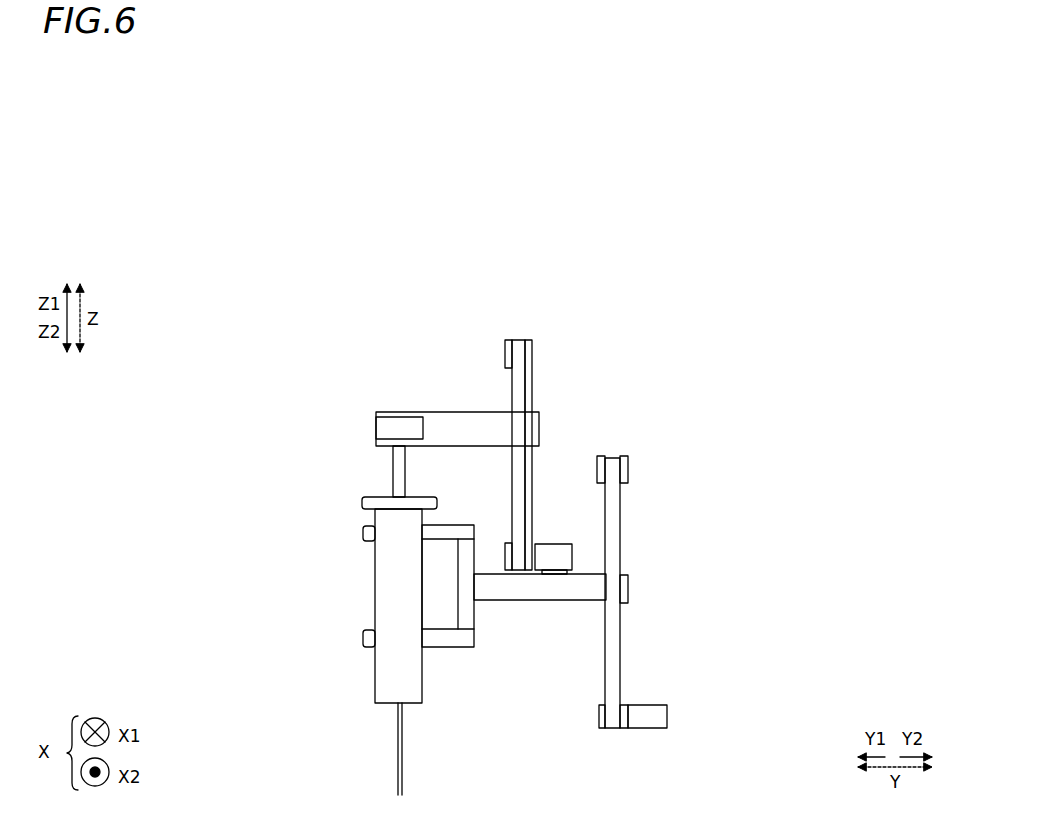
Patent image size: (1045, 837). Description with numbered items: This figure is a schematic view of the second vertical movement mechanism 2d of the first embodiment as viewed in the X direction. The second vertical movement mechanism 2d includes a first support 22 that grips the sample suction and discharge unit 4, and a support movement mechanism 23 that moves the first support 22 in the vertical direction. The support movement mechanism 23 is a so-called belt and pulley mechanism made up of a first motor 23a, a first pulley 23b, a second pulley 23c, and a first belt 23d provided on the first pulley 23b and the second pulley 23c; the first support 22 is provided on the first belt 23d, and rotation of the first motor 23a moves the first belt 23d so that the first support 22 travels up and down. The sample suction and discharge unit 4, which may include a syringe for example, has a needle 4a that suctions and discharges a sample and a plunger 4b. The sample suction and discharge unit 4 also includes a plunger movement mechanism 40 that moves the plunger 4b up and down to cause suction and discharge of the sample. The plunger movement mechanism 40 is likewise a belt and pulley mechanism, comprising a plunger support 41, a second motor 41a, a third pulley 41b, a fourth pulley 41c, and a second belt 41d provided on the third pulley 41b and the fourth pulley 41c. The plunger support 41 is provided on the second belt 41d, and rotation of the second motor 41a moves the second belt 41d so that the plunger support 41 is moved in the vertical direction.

The second vertical movement mechanism 2d is at (657, 211).
The plunger movement mechanism 40 is at (573, 382).
The plunger support 41 is at (450, 411).
The second motor 41a is at (548, 542).
The third pulley 41b is at (507, 552).
The fourth pulley 41c is at (506, 342).
The second belt 41d is at (533, 393).
The sample suction and discharge unit 4 is at (361, 594).
The needle 4a is at (403, 757).
The plunger 4b is at (391, 473).
The first support 22 is at (474, 651).
The support movement mechanism 23 is at (663, 544).
The first motor 23a is at (650, 728).
The first pulley 23b is at (595, 728).
The second pulley 23c is at (622, 458).
The first belt 23d is at (622, 643).